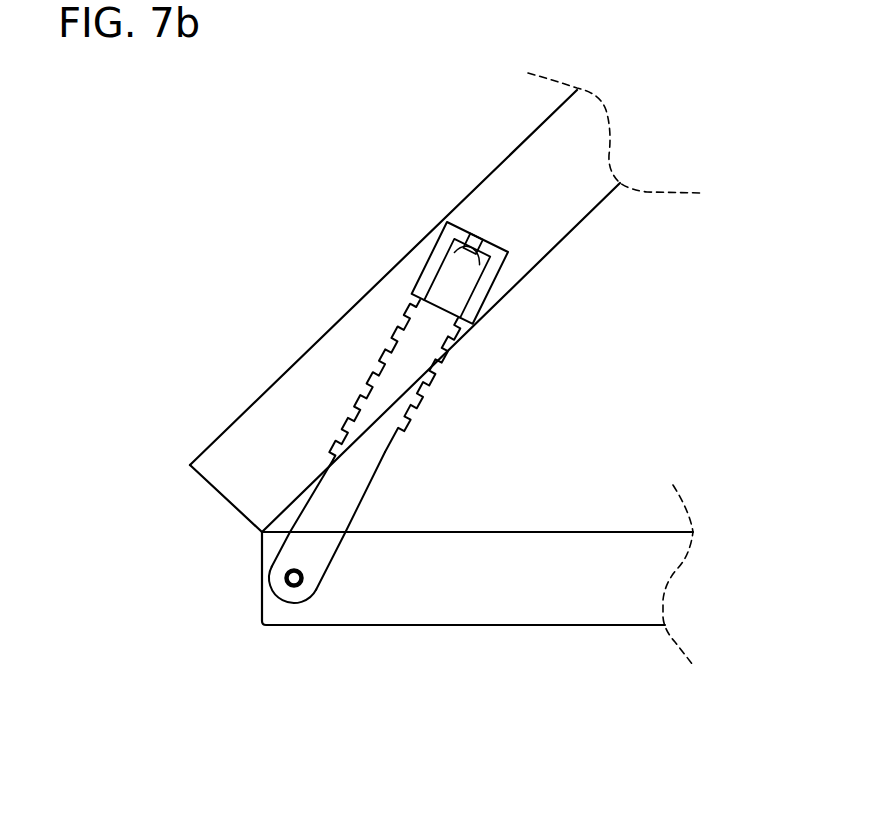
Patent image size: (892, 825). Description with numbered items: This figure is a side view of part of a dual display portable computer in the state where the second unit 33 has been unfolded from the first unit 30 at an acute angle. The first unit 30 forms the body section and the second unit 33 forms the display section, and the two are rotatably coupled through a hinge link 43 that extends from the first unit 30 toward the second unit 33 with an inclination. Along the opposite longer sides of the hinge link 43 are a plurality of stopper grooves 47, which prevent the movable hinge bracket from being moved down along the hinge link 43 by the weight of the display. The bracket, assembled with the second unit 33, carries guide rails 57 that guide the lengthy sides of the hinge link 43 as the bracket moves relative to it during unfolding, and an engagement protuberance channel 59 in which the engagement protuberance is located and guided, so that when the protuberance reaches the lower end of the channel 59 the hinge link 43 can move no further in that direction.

The first unit 30 is at (540, 605).
The second unit 33 is at (550, 220).
The hinge link 43 is at (363, 382).
The stopper grooves 47 is at (420, 427).
The guide rails 57 is at (412, 270).
The engagement protuberance channel 59 is at (480, 233).